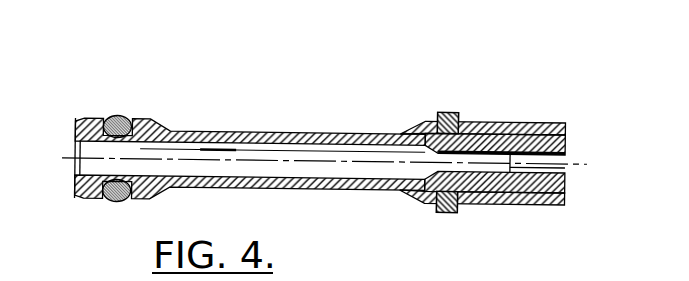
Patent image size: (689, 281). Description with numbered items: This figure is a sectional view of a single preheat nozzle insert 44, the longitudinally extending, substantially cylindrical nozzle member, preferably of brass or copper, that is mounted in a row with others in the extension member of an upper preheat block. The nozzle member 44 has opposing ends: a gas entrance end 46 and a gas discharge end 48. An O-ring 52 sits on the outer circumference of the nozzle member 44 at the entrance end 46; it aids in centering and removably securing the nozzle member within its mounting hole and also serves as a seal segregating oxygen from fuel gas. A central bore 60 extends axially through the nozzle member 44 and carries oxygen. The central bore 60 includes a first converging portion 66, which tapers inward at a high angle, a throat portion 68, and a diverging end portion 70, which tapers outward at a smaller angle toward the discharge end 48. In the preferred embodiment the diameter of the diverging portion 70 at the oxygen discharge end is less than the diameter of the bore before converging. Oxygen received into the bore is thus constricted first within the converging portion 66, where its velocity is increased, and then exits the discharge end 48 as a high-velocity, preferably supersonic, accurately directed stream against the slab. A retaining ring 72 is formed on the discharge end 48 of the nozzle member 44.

The nozzle insert 44 is at (232, 124).
The gas entrance end 46 is at (75, 139).
The gas discharge end 48 is at (565, 123).
The O-ring 52 is at (122, 116).
The central bore 60 is at (316, 157).
The first converging portion 66 is at (499, 84).
The throat portion 68 is at (493, 150).
The diverging end portion 70 is at (567, 160).
The retaining ring 72 is at (446, 214).